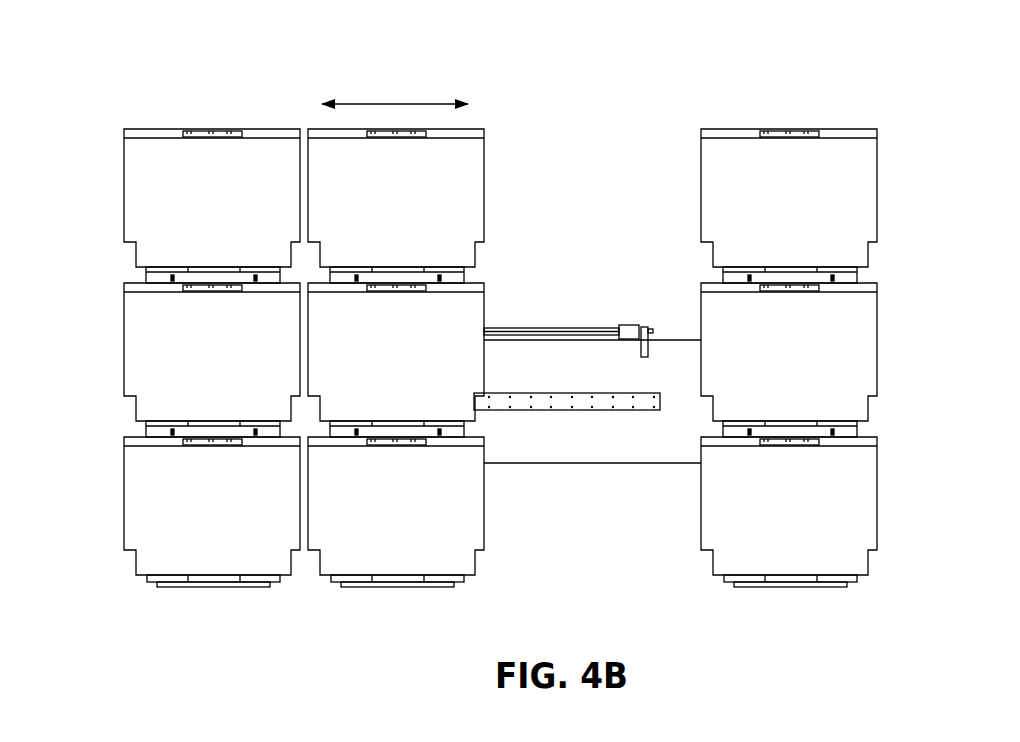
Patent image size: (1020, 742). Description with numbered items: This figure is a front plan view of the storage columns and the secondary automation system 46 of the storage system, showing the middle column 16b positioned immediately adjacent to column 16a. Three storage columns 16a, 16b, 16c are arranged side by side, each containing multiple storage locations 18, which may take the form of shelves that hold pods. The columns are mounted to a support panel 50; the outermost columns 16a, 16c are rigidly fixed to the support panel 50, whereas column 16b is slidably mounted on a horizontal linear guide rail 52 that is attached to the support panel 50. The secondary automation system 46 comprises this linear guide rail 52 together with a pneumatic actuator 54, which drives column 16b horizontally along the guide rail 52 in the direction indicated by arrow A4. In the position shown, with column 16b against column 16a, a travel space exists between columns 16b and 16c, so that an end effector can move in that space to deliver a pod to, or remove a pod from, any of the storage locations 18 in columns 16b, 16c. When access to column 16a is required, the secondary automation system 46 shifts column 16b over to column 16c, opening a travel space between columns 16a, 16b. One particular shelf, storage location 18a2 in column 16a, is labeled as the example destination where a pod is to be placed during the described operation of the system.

The secondary automation system 46 is at (622, 140).
The storage locations 18 is at (158, 211).
The storage location 18a2 is at (418, 363).
The storage column 16a is at (227, 590).
The storage column 16b is at (399, 590).
The storage column 16c is at (805, 595).
The pneumatic actuator 54 is at (578, 328).
The horizontal linear guide rail 52 is at (521, 408).
The support panel 50 is at (623, 452).
The arrow A4 is at (390, 103).